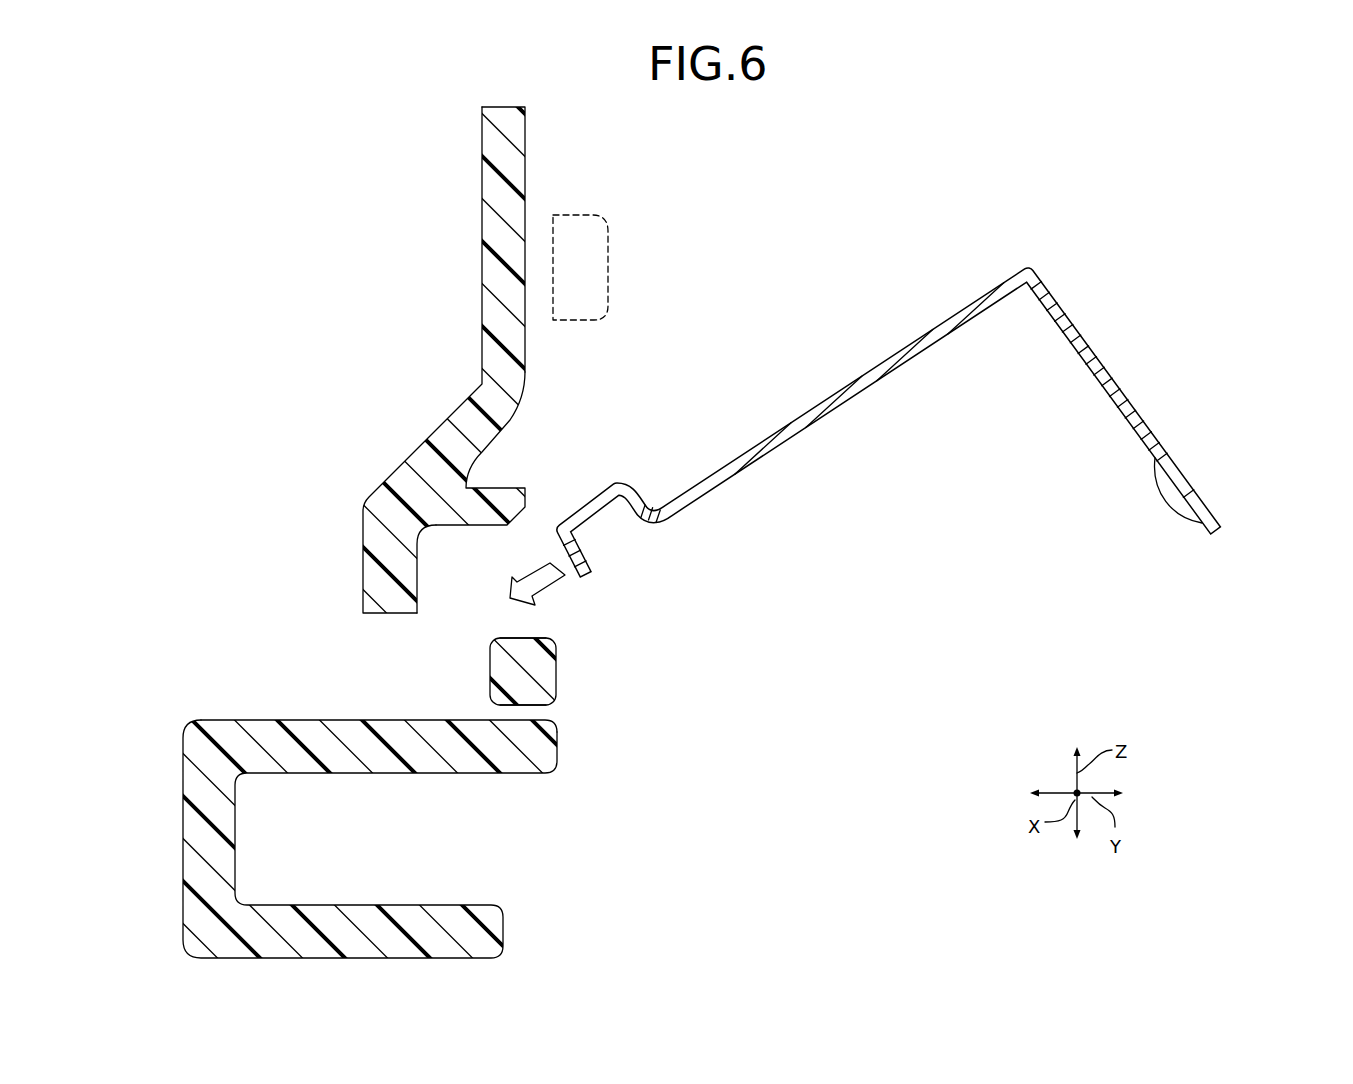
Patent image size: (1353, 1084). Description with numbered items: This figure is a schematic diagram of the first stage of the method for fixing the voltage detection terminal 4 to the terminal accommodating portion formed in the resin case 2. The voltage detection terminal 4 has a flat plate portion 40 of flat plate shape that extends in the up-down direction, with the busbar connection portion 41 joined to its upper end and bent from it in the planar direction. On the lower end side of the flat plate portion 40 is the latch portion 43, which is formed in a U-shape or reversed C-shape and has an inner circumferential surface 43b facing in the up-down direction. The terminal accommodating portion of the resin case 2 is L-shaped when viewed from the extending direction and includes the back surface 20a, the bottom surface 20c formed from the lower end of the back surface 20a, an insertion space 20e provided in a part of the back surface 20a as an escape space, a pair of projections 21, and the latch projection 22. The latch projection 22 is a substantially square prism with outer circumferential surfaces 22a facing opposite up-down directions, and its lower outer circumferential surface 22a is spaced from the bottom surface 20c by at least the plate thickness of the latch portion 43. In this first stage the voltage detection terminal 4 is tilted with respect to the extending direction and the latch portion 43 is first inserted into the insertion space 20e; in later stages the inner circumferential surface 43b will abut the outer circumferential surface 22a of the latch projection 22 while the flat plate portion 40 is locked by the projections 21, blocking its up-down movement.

The resin case 2 is at (462, 150).
The back surface 20a is at (527, 148).
The bottom surface 20c is at (380, 720).
The insertion space 20e is at (453, 567).
The projections 21 is at (603, 215).
The latch projection 22 is at (557, 673).
The outer circumferential surfaces 22a is at (509, 630).
The voltage detection terminal 4 is at (889, 398).
The flat plate portion 40 is at (865, 389).
The busbar connection portion 41 is at (1139, 394).
The latch portion 43 is at (582, 504).
The inner circumferential surface 43b is at (633, 530).